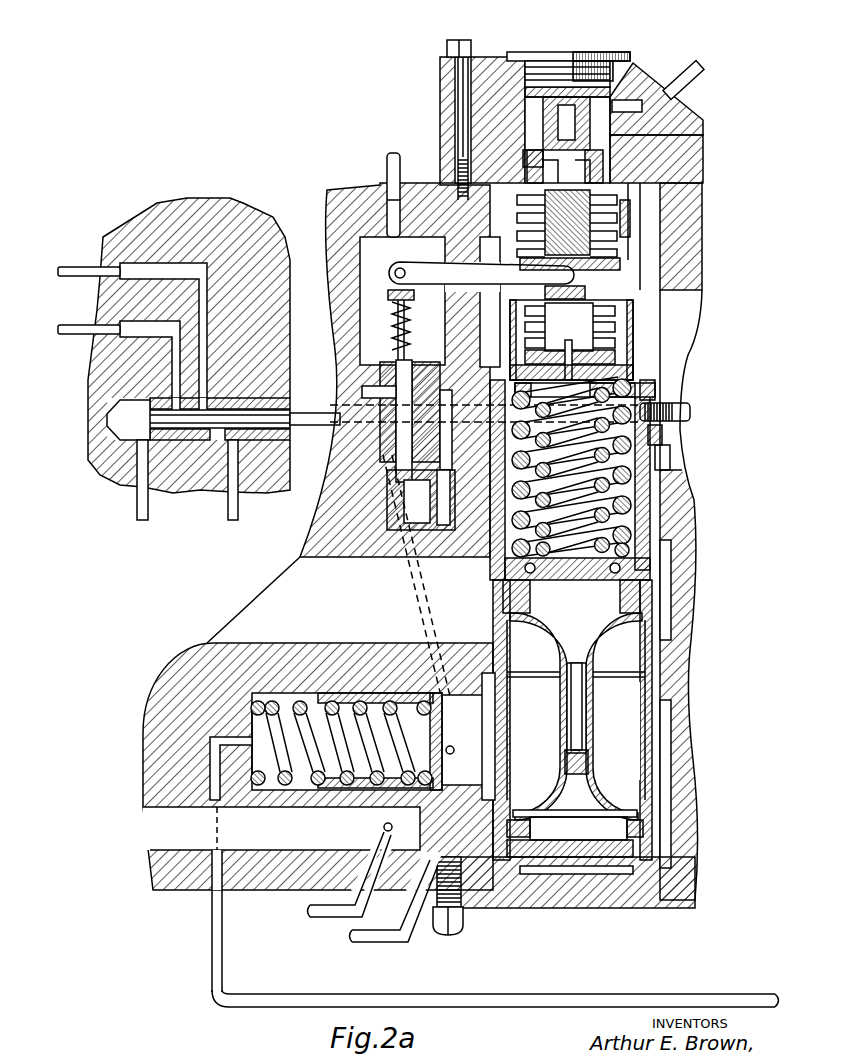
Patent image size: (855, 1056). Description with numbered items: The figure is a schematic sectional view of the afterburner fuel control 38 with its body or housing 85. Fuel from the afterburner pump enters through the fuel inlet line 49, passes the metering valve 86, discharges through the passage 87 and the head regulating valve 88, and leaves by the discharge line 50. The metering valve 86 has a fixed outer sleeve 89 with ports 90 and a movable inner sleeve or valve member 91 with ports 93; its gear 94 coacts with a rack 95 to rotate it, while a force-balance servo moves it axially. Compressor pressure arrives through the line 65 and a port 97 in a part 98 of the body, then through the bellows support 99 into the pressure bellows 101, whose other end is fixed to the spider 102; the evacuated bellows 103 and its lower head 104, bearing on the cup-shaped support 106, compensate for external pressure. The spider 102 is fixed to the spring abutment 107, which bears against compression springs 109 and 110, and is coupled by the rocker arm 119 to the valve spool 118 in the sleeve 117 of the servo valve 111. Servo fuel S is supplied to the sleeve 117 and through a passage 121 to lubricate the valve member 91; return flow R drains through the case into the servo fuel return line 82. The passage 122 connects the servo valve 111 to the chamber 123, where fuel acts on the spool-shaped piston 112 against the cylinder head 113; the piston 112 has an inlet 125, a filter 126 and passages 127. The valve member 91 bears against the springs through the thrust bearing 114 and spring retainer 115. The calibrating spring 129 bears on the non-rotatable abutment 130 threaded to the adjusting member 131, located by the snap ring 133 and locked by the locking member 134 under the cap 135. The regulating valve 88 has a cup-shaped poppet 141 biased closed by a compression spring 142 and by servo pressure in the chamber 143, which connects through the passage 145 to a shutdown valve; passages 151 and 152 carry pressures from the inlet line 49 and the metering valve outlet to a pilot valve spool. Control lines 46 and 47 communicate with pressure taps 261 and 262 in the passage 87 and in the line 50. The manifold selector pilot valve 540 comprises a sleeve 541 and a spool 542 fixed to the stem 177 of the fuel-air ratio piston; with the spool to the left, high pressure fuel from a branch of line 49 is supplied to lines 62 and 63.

The part of the body 98 is at (488, 70).
The snap ring 133 is at (548, 70).
The locking member 134 is at (601, 60).
The cap 135 is at (575, 52).
The line 65 is at (700, 70).
The port 97 is at (655, 107).
The rotatable adjusting member 131 is at (625, 97).
The reciprocable non-rotatable abutment 130 is at (534, 152).
The light calibrating spring 129 is at (523, 160).
The bellows support 99 is at (672, 168).
The cup-shaped support 106 is at (662, 190).
The pressure bellows 101 is at (640, 246).
The axially movable head or spider 102 is at (622, 266).
The evacuated bellows 103 is at (612, 316).
The lower head 104 is at (610, 360).
The reciprocable spring abutment 107 is at (660, 372).
The rack 95 is at (665, 393).
The stem 177 is at (297, 420).
The compression spring 109 is at (662, 432).
The axially extended gear 94 is at (670, 455).
The compression spring 110 is at (652, 470).
The metering valve 86 is at (640, 597).
The passage 151 is at (680, 643).
The passage 152 is at (683, 770).
The rocker arm 119 is at (438, 276).
The movable valve spool 118 is at (412, 362).
The sleeve 117 is at (378, 368).
The servo fuel supply S is at (360, 392).
The servo valve 111 is at (346, 482).
The passage 121 is at (430, 548).
The servo fuel return R is at (142, 520).
The servo fuel return line 82 is at (393, 152).
The body or housing 85 is at (265, 222).
The line 63 is at (58, 272).
The line 62 is at (58, 330).
The sleeve 541 is at (287, 405).
The manifold selector pilot valve 540 is at (91, 481).
The spool 542 is at (256, 428).
The fuel inlet line 49 is at (233, 521).
The afterburner fuel control 38 is at (202, 651).
The head regulating valve 88 is at (363, 688).
The compression spring 142 is at (275, 703).
The cup-shaped slidable poppet 141 is at (332, 700).
The chamber 143 is at (267, 788).
The fuel control discharge line 50 is at (165, 817).
The pressure tap 262 is at (383, 827).
The control line 47 is at (342, 905).
The control line 46 is at (372, 938).
The passage 145 is at (282, 1002).
The passage 122 is at (425, 637).
The ports 90 is at (500, 594).
The fixed outer sleeve 89 is at (490, 637).
The ports 93 is at (510, 655).
The passage 87 is at (472, 706).
The pressure tap 261 is at (456, 750).
The movable inner sleeve or valve member 91 is at (600, 662).
The inlet 125 is at (588, 714).
The filter 126 is at (591, 758).
The passages 127 is at (645, 812).
The thrust bearing 114 is at (532, 574).
The spring retainer 115 is at (615, 604).
The piston 112 is at (546, 846).
The cylinder head 113 is at (563, 904).
The chamber 123 is at (620, 868).